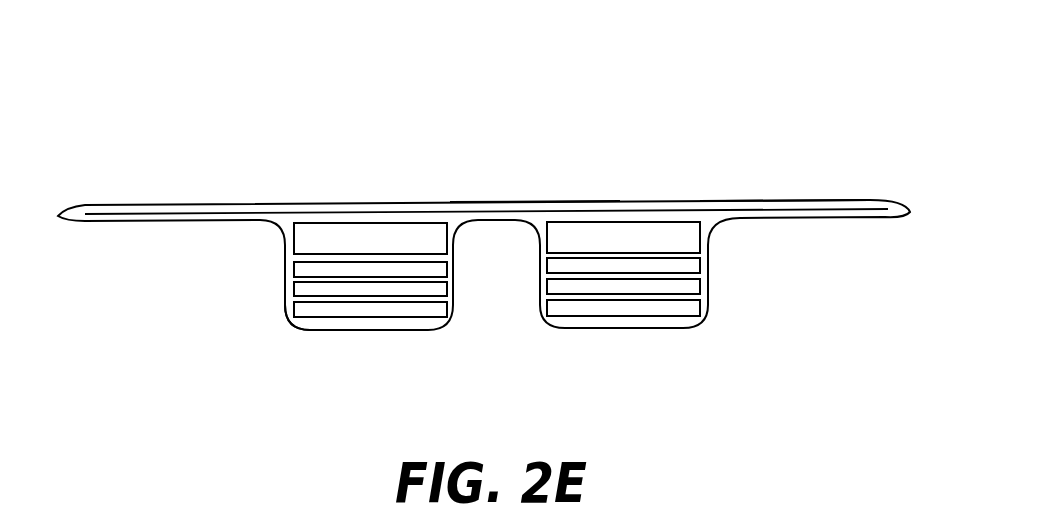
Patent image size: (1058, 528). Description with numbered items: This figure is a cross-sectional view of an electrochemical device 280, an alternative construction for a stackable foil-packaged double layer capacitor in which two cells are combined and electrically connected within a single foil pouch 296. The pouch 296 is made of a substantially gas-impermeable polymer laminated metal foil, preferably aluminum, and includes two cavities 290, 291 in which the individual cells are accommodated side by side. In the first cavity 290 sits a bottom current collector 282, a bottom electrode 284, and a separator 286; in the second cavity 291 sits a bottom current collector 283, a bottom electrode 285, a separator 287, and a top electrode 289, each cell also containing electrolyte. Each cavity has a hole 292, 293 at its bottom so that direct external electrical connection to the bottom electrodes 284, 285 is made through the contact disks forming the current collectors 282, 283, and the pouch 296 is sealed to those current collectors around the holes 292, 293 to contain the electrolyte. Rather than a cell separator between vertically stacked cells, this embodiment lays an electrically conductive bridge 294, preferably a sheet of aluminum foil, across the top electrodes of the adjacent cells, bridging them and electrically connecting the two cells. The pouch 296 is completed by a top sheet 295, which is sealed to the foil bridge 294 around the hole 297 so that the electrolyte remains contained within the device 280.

The electrochemical device 280 is at (215, 122).
The bottom current collector 282 is at (296, 233).
The bottom current collector 283 is at (708, 305).
The bottom electrode 284 is at (296, 295).
The bottom electrode 285 is at (690, 308).
The separator 286 is at (296, 270).
The separator 287 is at (690, 287).
The top electrode 289 is at (683, 240).
The cavity 290 is at (287, 310).
The cavity 291 is at (695, 268).
The hole 292 is at (367, 331).
The hole 293 is at (620, 329).
The electrically conductive bridge 294 is at (373, 209).
The top sheet 295 is at (725, 200).
The foil pouch 296 is at (453, 295).
The hole 297 is at (540, 185).